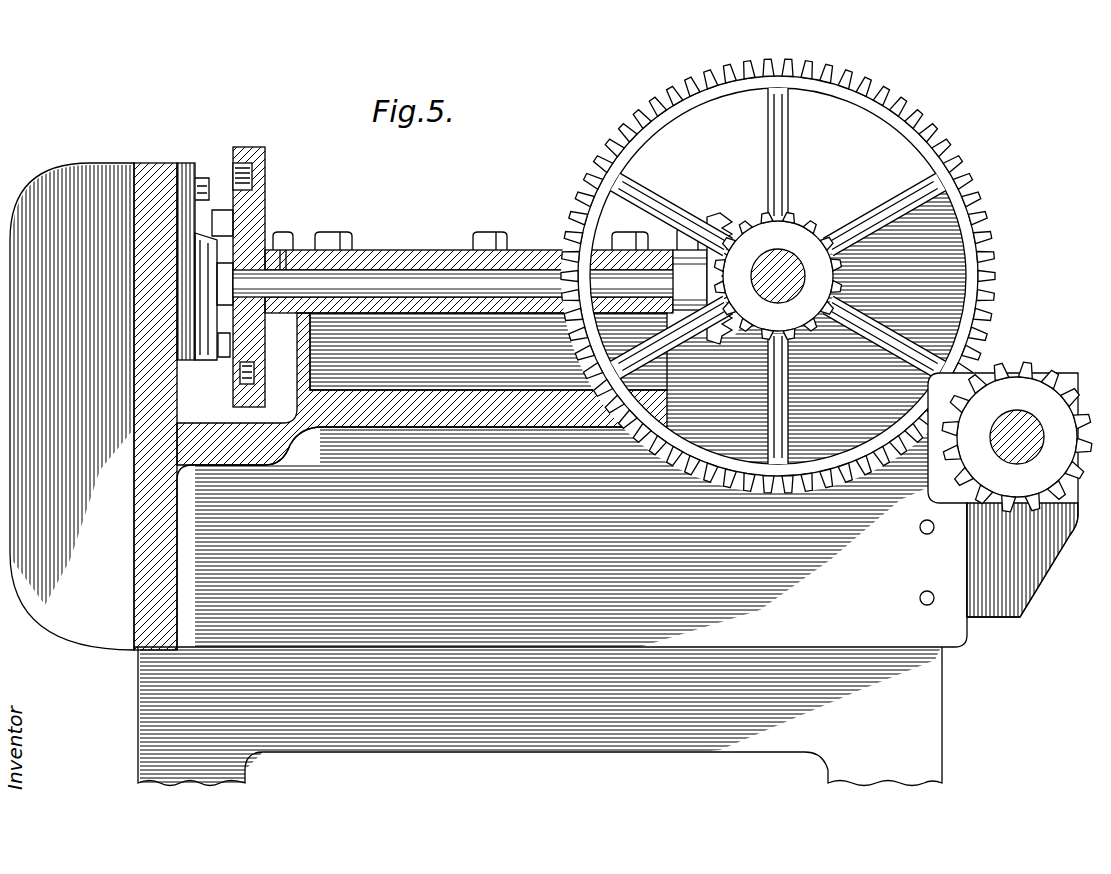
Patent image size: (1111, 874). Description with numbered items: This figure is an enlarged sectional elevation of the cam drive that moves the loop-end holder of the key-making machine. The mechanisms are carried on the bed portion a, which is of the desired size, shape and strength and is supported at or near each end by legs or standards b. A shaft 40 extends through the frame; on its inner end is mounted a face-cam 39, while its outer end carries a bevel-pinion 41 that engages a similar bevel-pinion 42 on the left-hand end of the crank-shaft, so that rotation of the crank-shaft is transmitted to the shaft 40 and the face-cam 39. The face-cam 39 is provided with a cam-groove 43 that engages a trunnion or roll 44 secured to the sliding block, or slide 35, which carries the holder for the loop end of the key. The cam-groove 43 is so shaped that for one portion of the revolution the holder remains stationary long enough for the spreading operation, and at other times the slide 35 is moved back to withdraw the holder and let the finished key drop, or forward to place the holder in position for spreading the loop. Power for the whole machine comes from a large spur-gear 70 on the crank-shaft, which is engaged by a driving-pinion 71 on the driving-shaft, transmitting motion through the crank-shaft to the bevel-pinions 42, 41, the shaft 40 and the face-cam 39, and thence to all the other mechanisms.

The slide 35 is at (213, 327).
The face-cam 39 is at (266, 180).
The shaft 40 is at (424, 278).
The bevel-pinion 41 is at (712, 218).
The bevel-pinion 42 is at (781, 232).
The cam-groove 43 is at (233, 175).
The trunnion or roll 44 is at (233, 262).
The large spur-gear 70 is at (995, 219).
The driving-pinion 71 is at (1016, 436).
The bed portion a is at (550, 416).
The legs or standards b is at (497, 745).